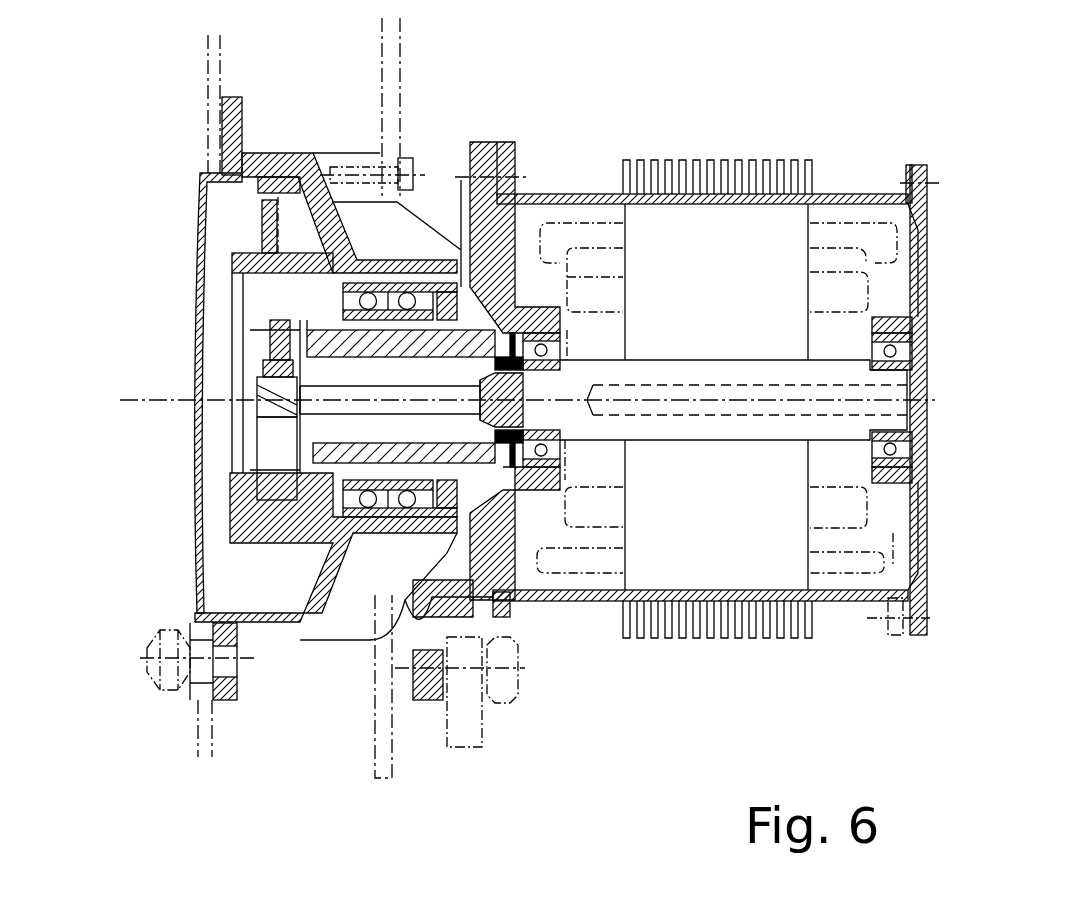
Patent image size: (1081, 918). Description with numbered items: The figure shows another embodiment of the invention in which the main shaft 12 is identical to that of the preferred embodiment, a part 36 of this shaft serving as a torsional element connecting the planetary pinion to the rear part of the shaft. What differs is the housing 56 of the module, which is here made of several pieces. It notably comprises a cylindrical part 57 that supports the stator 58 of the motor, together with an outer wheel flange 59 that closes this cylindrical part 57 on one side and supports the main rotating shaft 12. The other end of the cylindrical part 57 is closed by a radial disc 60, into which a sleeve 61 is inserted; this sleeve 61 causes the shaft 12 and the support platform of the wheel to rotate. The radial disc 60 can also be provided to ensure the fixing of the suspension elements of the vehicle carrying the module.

The main shaft 12 is at (690, 346).
The part of the shaft serving as torsional element 36 is at (347, 402).
The housing 56 is at (584, 168).
The cylindrical part 57 is at (828, 212).
The stator 58 is at (732, 233).
The outer wheel flange 59 is at (927, 217).
The radial disc 60 is at (460, 180).
The sleeve 61 is at (523, 310).